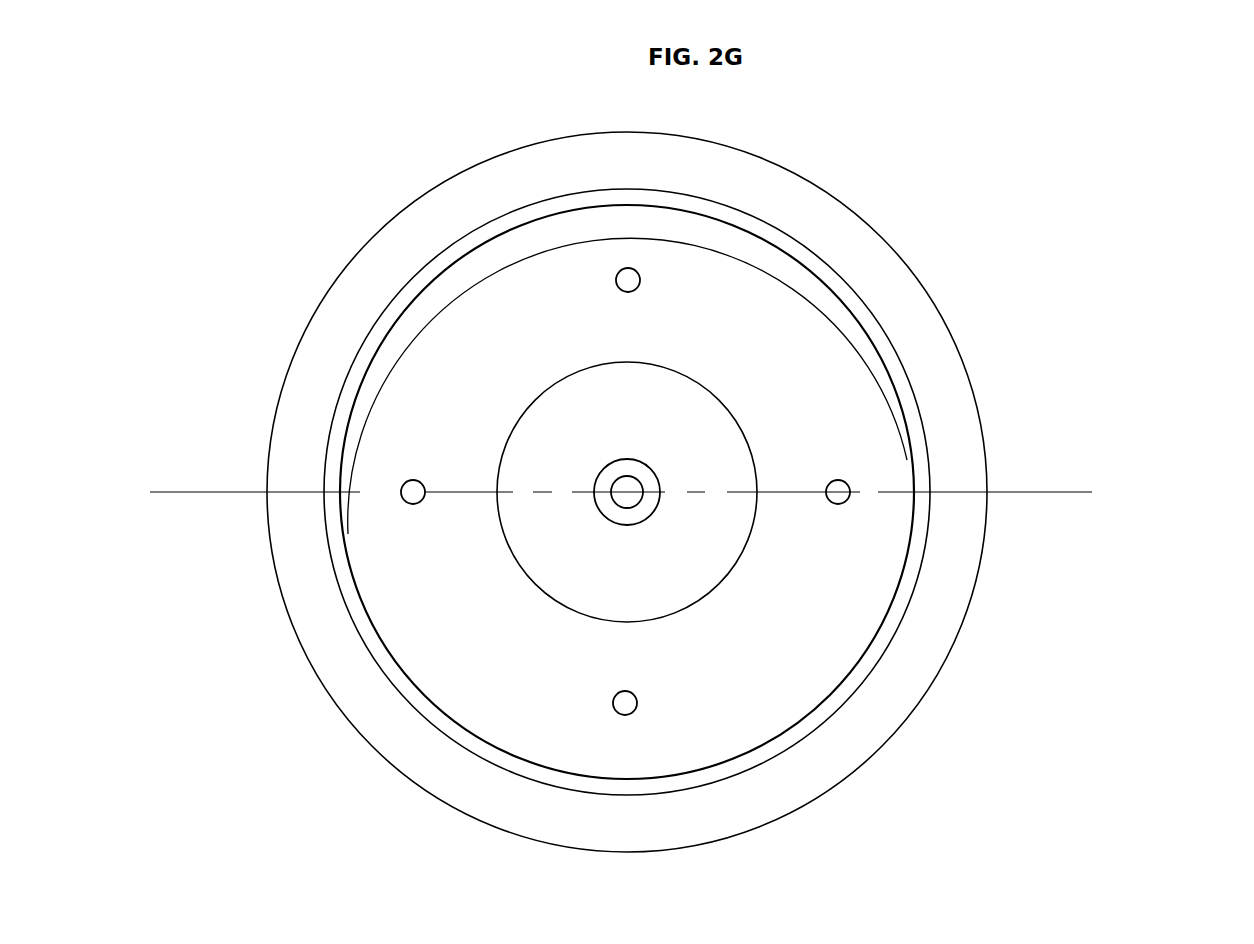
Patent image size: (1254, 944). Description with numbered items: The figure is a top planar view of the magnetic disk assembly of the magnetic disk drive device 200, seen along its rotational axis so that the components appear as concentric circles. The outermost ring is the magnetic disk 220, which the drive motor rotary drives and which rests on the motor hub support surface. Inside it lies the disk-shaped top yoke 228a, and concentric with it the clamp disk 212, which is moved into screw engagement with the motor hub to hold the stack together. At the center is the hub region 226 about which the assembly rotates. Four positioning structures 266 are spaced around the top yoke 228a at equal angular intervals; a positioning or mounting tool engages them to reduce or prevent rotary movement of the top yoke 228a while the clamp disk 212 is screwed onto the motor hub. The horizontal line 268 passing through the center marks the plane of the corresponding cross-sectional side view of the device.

The magnetic disk drive device 200 is at (1232, 168).
The clamp disk 212 is at (882, 345).
The magnetic disk 220 is at (320, 627).
The central hub 226 is at (580, 442).
The top yoke 228a is at (813, 627).
The positioning structures 266 is at (617, 275).
The line 268 is at (1042, 498).